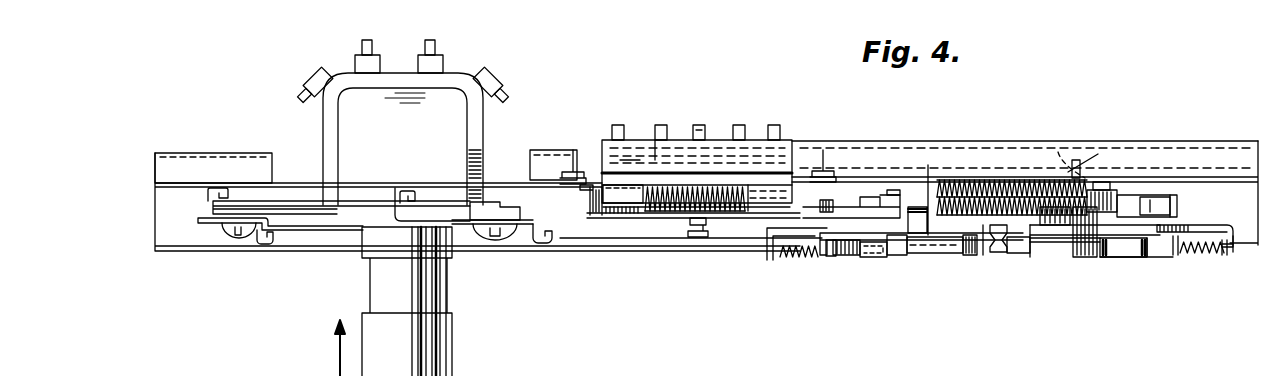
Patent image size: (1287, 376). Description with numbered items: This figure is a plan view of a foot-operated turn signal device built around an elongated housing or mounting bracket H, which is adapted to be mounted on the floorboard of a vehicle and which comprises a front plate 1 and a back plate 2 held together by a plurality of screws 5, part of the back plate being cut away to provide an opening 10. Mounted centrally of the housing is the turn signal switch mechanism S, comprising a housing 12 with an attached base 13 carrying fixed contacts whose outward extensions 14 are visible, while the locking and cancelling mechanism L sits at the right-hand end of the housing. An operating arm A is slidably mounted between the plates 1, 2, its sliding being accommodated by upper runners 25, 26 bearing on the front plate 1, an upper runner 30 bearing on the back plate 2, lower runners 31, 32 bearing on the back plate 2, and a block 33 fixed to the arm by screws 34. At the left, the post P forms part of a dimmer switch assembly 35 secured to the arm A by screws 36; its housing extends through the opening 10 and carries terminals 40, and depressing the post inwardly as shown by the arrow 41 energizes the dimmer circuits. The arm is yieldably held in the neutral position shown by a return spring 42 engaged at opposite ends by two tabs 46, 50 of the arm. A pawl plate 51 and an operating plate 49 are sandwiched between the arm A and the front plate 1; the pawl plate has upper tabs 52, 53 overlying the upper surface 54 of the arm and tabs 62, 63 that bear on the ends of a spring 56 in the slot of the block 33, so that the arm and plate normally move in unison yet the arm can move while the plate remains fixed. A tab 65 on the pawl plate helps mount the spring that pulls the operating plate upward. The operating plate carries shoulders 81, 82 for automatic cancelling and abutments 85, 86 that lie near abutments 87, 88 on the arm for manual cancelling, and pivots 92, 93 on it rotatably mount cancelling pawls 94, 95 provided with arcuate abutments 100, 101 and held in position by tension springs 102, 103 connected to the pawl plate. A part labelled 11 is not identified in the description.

The front plate 1 is at (296, 250).
The back plate 2 is at (296, 182).
The screws 5 is at (699, 238).
The opening 10 is at (530, 158).
The bracket 11 is at (572, 172).
The housing 12 is at (632, 160).
The base 13 is at (684, 138).
The outward extensions of fixed contacts 14 is at (662, 125).
The upper runner 25 is at (266, 246).
The upper runner 26 is at (547, 245).
The upper runner 30 is at (405, 190).
The lower runner 31 is at (215, 186).
The lower runner 32 is at (592, 195).
The block 33 is at (1072, 160).
The screws 34 is at (895, 190).
The dimmer switch assembly 35 is at (480, 113).
The screws 36 is at (230, 236).
The terminals 40 is at (328, 72).
The arrow 41 is at (340, 356).
The return spring 42 is at (662, 212).
The tab 46 is at (627, 210).
The operating plate 49 is at (984, 257).
The tab 50 is at (758, 190).
The pawl plate 51 is at (1200, 227).
The upper tab 52 is at (905, 256).
The upper tab 53 is at (1085, 258).
The upper surface 54 is at (1033, 258).
The spring 56 is at (1015, 180).
The tab 62 is at (930, 190).
The tab 63 is at (1064, 150).
The tab 65 is at (1001, 253).
The shoulder 81 is at (933, 254).
The shoulder 82 is at (1072, 228).
The abutment 85 is at (885, 195).
The abutment 86 is at (1115, 192).
The abutment 87 is at (834, 194).
The abutment 88 is at (1160, 196).
The pivot 92 is at (1125, 257).
The pivot 93 is at (855, 256).
The cancelling pawl 94 is at (1176, 256).
The cancelling pawl 95 is at (835, 256).
The arcuate abutment 100 is at (1128, 258).
The arcuate abutment 101 is at (880, 257).
The tension spring 102 is at (1228, 255).
The tension spring 103 is at (790, 258).
The operating arm A is at (198, 221).
The housing or mounting bracket H is at (882, 139).
The locking and cancelling mechanism L is at (990, 251).
The post P is at (432, 350).
The turn signal switch mechanism S is at (750, 138).